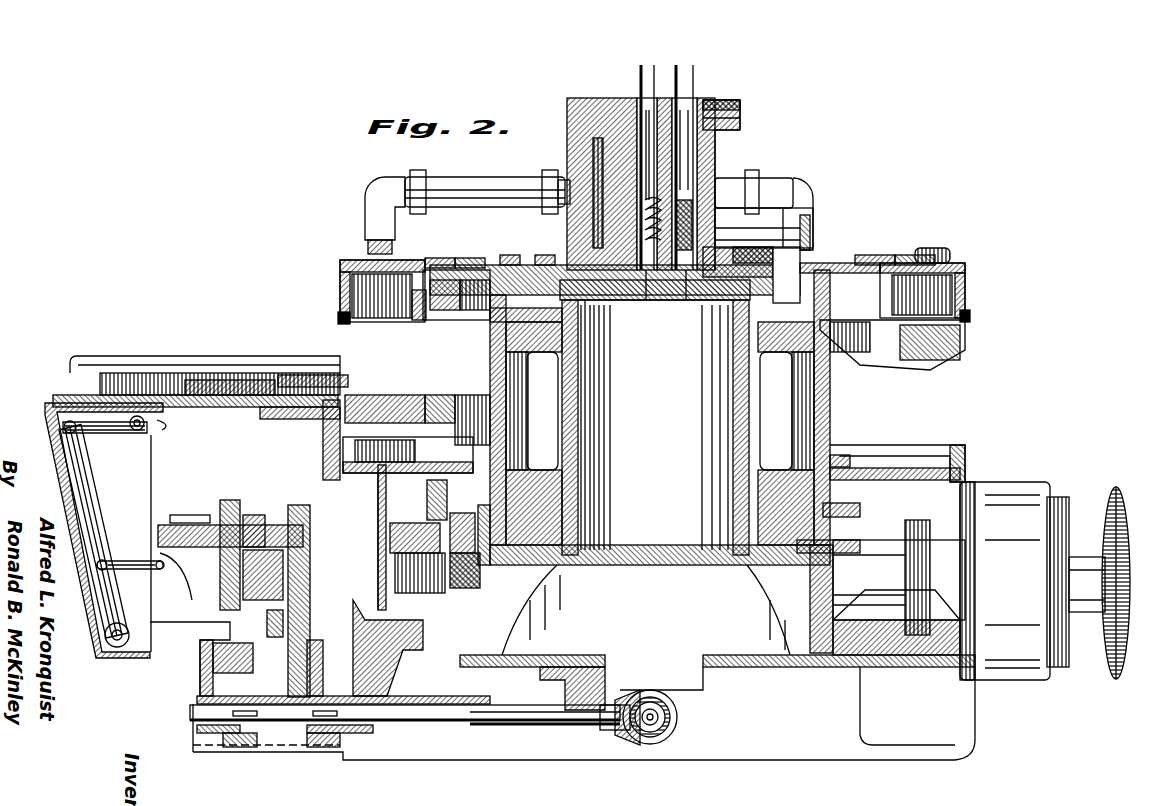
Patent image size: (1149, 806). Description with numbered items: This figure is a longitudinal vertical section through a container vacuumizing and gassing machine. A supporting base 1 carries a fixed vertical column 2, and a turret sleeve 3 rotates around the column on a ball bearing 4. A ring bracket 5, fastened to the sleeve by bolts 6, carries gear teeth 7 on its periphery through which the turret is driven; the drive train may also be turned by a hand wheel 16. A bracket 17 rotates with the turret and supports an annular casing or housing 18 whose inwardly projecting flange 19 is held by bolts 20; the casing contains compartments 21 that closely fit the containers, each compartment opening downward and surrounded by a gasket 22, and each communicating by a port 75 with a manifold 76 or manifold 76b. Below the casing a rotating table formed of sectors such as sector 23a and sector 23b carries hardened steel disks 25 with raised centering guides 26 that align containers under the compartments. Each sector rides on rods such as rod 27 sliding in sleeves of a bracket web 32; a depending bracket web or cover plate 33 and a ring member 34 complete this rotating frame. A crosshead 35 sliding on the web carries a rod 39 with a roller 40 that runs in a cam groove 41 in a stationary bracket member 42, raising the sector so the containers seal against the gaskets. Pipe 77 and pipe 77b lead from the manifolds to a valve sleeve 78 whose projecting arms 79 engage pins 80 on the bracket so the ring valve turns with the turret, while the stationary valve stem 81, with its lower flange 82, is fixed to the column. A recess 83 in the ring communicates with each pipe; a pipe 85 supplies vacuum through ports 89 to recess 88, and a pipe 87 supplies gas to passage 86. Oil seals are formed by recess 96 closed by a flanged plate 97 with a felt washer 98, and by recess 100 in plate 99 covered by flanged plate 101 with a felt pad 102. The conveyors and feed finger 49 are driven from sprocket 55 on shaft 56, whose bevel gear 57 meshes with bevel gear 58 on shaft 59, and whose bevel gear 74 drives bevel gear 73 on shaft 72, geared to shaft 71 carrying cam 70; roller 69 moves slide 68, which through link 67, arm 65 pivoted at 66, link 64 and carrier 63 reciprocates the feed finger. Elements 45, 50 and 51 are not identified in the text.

The supporting base 1 is at (878, 760).
The column 2 is at (733, 390).
The turret sleeve 3 is at (830, 380).
The ball bearing 4 is at (548, 566).
The ring bracket 5 is at (448, 440).
The bolts 6 is at (478, 398).
The gear teeth 7 is at (340, 480).
The hand wheel 16 is at (1105, 500).
The bracket 17 is at (835, 265).
The casing or housing 18 is at (345, 268).
The inwardly projecting flange 19 is at (465, 258).
The bolts 20 is at (440, 258).
The compartments 21 is at (345, 292).
The gasket 22 is at (340, 318).
The table sector 23a is at (440, 395).
The table sector 23b is at (850, 352).
The hardened steel disks 25 is at (378, 395).
The centering guide 26 is at (430, 395).
The rod 27 is at (455, 722).
The bracket web 32 is at (428, 495).
The depending bracket web or cover plate 33 is at (376, 500).
The ring member 34 is at (440, 640).
The crosshead 35 is at (390, 538).
The rod 39 is at (466, 520).
The roller 40 is at (455, 588).
The cam groove 41 is at (845, 540).
The bracket member 42 is at (840, 512).
The housing frame 45 is at (300, 425).
The feed finger 49 is at (215, 372).
The slide plate 50 is at (265, 373).
The mounting plate 51 is at (338, 372).
The sprocket 55 is at (245, 735).
The shaft 56 is at (318, 748).
The bevel gear 57 is at (630, 735).
The bevel gear 58 is at (680, 712).
The shaft 59 is at (658, 722).
The carrier 63 is at (149, 418).
The link 64 is at (112, 434).
The arm 65 is at (92, 508).
The pivot 66 is at (118, 648).
The link 67 is at (118, 560).
The slide 68 is at (206, 613).
The roller 69 is at (260, 520).
The cam 70 is at (172, 525).
The shaft 71 is at (205, 660).
The shaft 72 is at (300, 580).
The bevel gear 73 is at (270, 748).
The bevel gear 74 is at (330, 748).
The port 75 is at (395, 315).
The manifold 76 is at (365, 242).
The manifold 76b is at (935, 250).
The pipe 77 is at (472, 188).
The pipe 77b is at (790, 190).
The valve sleeve 78 is at (715, 148).
The projecting arms 79 is at (790, 232).
The pin 80 is at (790, 215).
The valve stem 81 is at (600, 138).
The flange 82 is at (725, 250).
The recess 83 is at (593, 152).
The pipe 85 is at (640, 82).
The passage 86 is at (697, 165).
The pipe 87 is at (684, 72).
The recess 88 is at (690, 298).
The ports 89 is at (646, 298).
The countersink or recess 96 is at (730, 125).
The flanged plate 97 is at (730, 108).
The felt washer 98 is at (718, 99).
The plate 99 is at (558, 290).
The recess 100 is at (587, 315).
The flanged plate 101 is at (512, 255).
The felt pad 102 is at (548, 255).